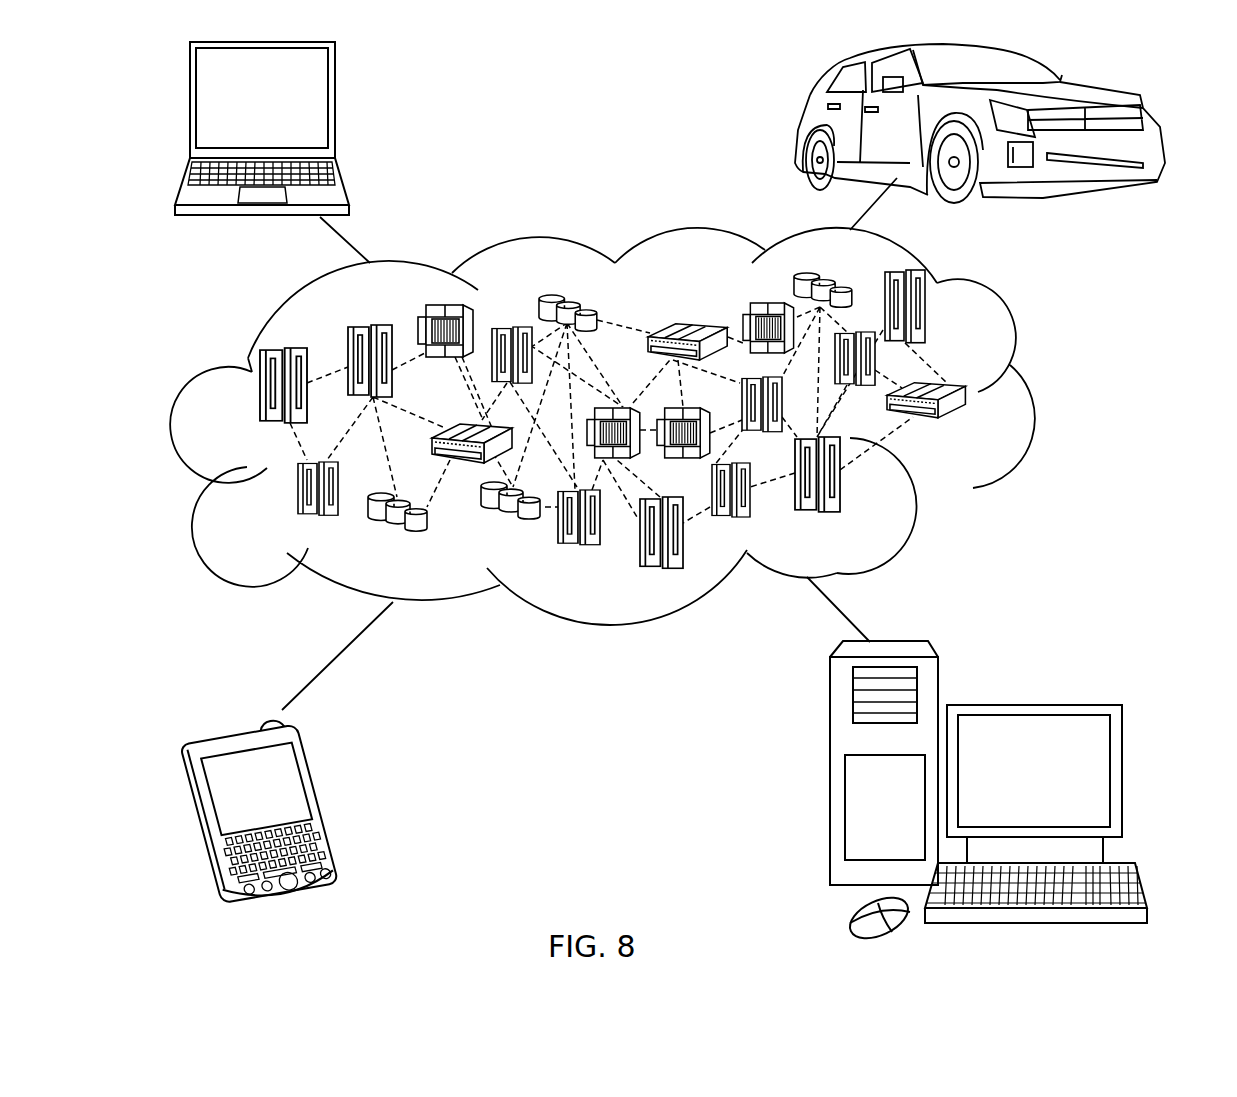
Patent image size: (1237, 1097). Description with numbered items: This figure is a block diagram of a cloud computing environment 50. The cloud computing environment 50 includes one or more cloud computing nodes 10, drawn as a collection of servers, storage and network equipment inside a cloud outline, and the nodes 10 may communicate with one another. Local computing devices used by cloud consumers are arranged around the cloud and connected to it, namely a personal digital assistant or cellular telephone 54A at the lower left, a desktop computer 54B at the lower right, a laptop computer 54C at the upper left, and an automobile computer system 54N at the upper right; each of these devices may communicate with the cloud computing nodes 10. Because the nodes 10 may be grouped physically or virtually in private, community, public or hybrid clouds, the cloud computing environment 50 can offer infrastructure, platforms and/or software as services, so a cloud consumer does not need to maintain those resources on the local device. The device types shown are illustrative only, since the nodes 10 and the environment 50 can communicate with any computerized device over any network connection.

The cloud computing environment 50 is at (1032, 395).
The cloud computing nodes 10 is at (968, 428).
The personal digital assistant (PDA) or cellular telephone 54A is at (323, 803).
The desktop computer 54B is at (1030, 705).
The laptop computer 54C is at (335, 106).
The automobile computer system 54N is at (802, 122).